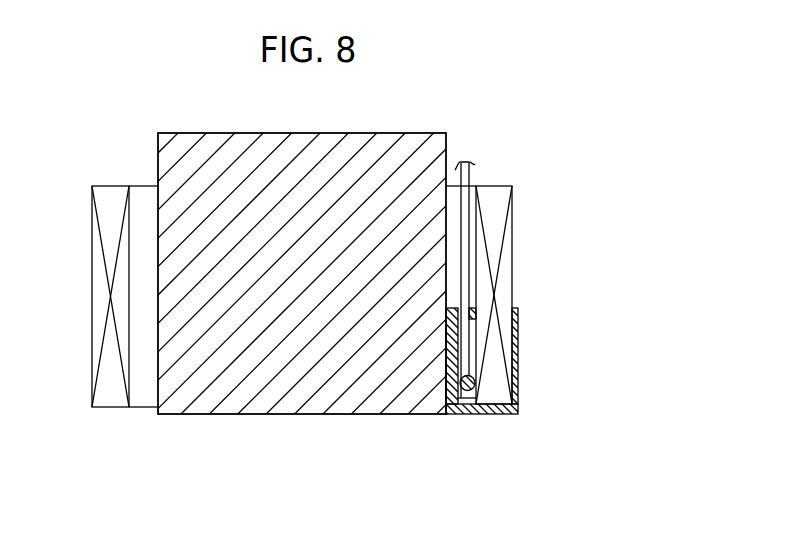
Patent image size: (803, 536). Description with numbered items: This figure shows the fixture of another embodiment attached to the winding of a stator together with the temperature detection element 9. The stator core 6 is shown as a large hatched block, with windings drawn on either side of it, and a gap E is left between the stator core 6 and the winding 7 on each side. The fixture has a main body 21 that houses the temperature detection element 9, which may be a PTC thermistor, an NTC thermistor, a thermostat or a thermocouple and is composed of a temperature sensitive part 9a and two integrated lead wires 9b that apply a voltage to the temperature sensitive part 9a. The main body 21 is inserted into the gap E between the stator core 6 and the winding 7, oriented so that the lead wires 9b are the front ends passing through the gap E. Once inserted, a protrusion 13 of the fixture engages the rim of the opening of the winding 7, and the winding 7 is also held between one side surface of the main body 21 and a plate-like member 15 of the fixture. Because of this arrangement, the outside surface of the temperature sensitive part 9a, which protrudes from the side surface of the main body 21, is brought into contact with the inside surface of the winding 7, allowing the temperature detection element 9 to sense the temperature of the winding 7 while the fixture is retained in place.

The stator core 6 is at (208, 408).
The winding 7 is at (505, 283).
The temperature detection element 9 is at (478, 345).
The temperature sensitive part 9a is at (478, 387).
The lead wires 9b is at (466, 173).
The protrusion 13 is at (485, 406).
The plate-like member 15 is at (515, 322).
The fixture main body 21 is at (459, 403).
The gap E is at (145, 197).